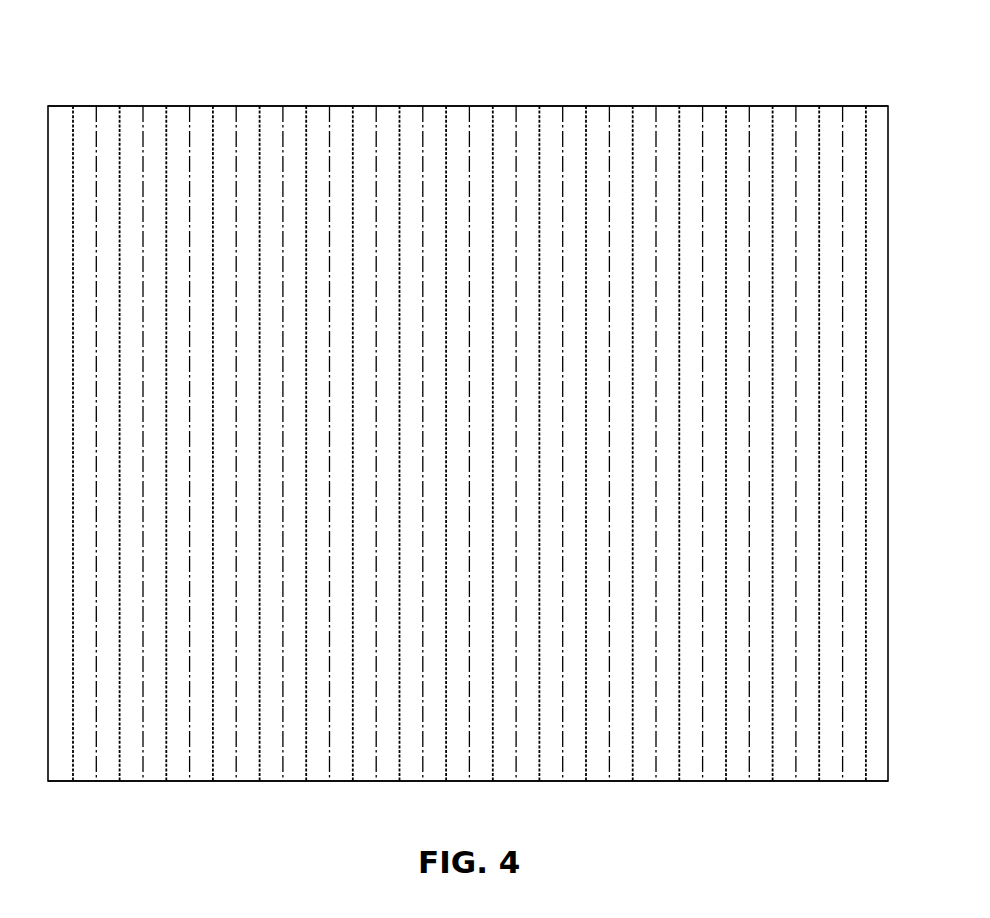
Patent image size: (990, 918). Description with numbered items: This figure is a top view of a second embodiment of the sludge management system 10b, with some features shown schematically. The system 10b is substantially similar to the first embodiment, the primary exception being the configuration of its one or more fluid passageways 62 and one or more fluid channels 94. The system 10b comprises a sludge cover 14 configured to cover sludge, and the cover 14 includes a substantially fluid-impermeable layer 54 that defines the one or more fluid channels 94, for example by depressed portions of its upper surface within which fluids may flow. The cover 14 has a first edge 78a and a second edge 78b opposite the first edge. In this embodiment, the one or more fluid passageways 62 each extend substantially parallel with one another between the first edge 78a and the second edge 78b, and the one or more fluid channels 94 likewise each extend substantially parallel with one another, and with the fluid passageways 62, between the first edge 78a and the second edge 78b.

The sludge management system 10b is at (877, 73).
The sludge cover 14 is at (913, 154).
The substantially fluid-impermeable layer 54 is at (880, 532).
The first edge 78a is at (178, 105).
The second edge 78b is at (693, 781).
The fluid channels 94 is at (445, 143).
The fluid passageways 62 is at (565, 138).